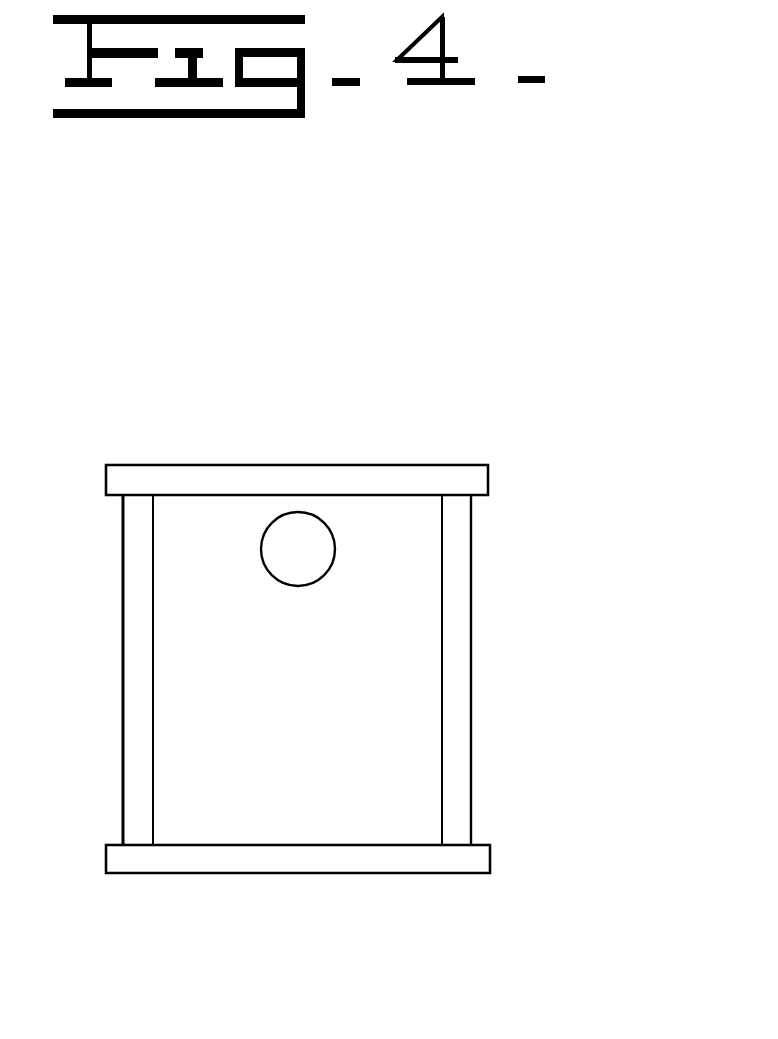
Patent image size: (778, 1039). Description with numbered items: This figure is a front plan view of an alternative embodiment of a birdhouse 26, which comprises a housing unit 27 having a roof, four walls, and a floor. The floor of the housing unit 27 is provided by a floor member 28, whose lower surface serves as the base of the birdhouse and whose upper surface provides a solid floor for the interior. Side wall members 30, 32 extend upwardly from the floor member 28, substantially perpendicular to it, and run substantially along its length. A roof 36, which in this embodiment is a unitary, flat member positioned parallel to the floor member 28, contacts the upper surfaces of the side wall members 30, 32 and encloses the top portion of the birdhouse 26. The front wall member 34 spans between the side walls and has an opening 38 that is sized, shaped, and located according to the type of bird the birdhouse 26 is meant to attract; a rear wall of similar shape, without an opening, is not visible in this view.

The birdhouse 26 is at (630, 347).
The housing unit 27 is at (578, 528).
The floor member 28 is at (490, 855).
The side wall member 30 is at (471, 768).
The side wall member 32 is at (123, 688).
The front wall member 34 is at (408, 667).
The roof 36 is at (292, 465).
The opening 38 is at (297, 546).